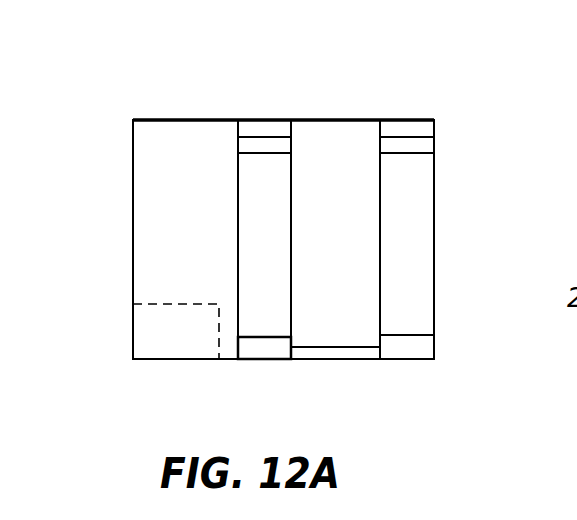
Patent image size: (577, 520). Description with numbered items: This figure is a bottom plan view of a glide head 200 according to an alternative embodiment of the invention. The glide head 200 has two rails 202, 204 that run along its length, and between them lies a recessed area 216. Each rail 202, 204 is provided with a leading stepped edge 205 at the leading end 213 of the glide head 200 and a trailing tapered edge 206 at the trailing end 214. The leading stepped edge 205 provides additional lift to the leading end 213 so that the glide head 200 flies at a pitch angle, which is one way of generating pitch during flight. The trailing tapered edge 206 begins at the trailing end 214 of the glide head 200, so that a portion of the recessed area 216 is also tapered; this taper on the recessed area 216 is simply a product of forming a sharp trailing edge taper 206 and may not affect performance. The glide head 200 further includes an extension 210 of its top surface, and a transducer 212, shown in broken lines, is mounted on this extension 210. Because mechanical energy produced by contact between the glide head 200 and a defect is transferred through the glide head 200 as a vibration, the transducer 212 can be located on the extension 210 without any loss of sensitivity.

The glide head 200 is at (440, 51).
The rail 202 is at (238, 313).
The rail 204 is at (434, 223).
The leading stepped edge 205 is at (265, 136).
The trailing tapered edge 206 is at (265, 350).
The extension 210 is at (133, 222).
The transducer 212 is at (138, 332).
The leading end 213 is at (310, 120).
The trailing end 214 is at (352, 360).
The recessed area 216 is at (338, 133).